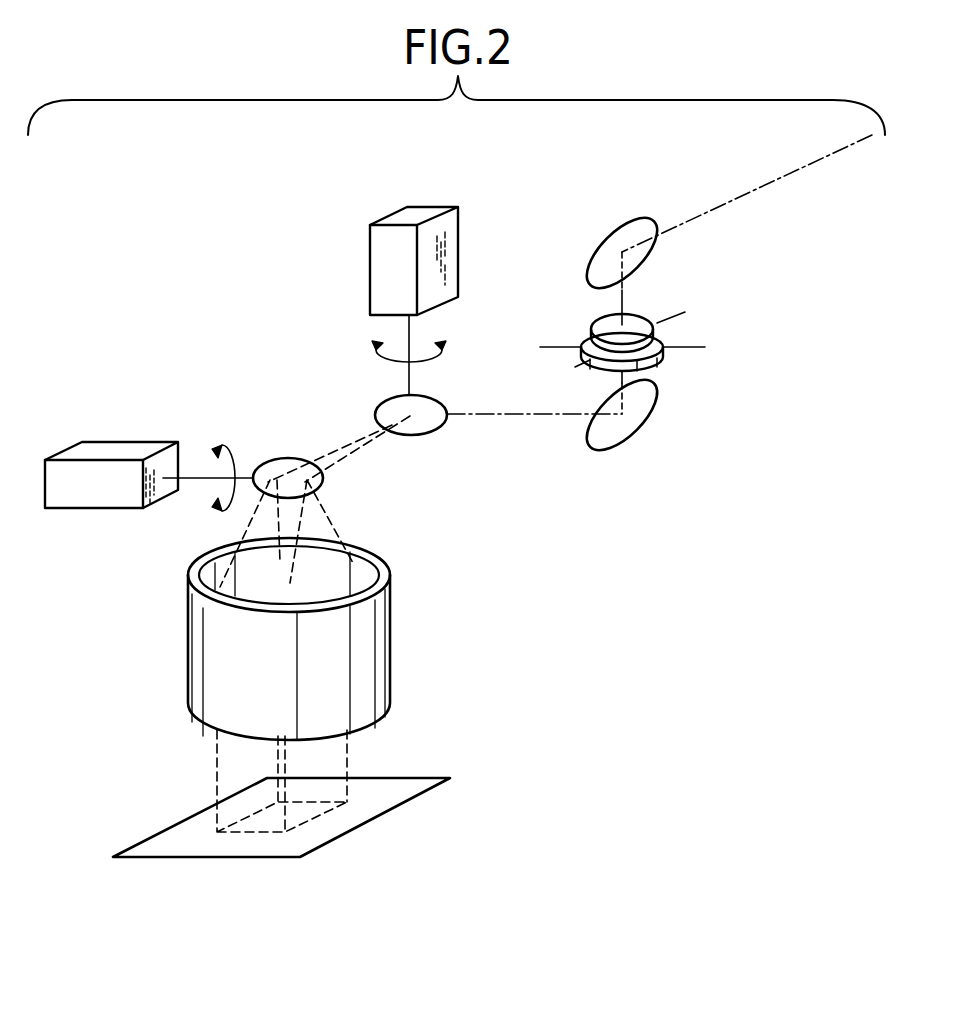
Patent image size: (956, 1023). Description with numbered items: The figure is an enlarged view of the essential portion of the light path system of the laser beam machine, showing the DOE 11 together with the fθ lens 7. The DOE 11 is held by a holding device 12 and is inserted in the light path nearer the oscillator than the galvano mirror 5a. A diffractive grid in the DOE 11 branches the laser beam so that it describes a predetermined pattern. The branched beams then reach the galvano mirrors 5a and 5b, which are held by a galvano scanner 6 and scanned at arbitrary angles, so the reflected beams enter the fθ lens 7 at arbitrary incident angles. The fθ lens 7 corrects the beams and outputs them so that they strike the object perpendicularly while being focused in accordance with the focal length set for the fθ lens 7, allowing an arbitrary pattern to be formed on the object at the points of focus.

The galvano mirror 5a is at (376, 404).
The galvano mirror 5b is at (288, 458).
The galvano scanner 6 is at (123, 443).
The fθ lens 7 is at (392, 650).
The DOE 11 is at (638, 321).
The holding device 12 is at (663, 366).